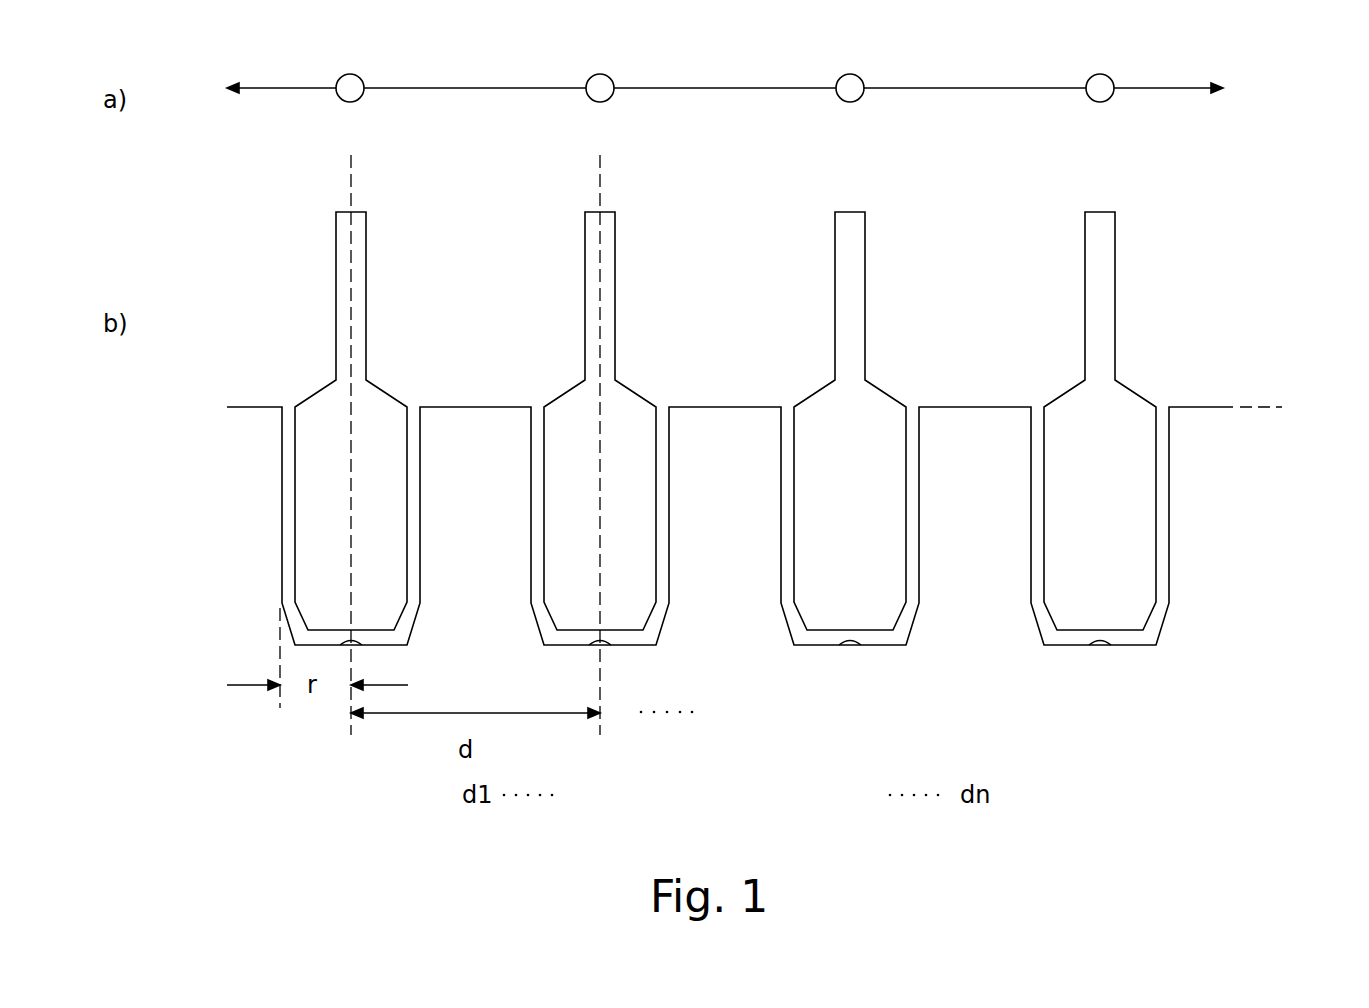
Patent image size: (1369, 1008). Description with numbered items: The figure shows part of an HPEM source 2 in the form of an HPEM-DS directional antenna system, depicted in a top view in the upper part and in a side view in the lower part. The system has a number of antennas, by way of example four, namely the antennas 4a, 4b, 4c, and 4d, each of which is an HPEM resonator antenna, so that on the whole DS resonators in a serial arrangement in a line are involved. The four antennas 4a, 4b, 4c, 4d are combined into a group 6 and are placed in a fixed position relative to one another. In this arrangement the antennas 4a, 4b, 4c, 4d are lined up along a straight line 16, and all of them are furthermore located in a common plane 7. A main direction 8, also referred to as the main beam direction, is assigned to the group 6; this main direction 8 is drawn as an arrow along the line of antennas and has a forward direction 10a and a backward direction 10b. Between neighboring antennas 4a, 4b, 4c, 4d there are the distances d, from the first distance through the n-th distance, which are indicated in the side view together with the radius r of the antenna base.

The HPEM source 2 is at (1286, 262).
The antenna 4a is at (355, 76).
The antenna 4b is at (605, 76).
The antenna 4c is at (855, 76).
The antenna 4d is at (1105, 76).
The group 6 is at (1262, 97).
The common plane 7 is at (1262, 407).
The main direction 8 is at (978, 88).
The forward direction 10a is at (1157, 88).
The backward direction 10b is at (300, 88).
The straight line 16 is at (796, 501).